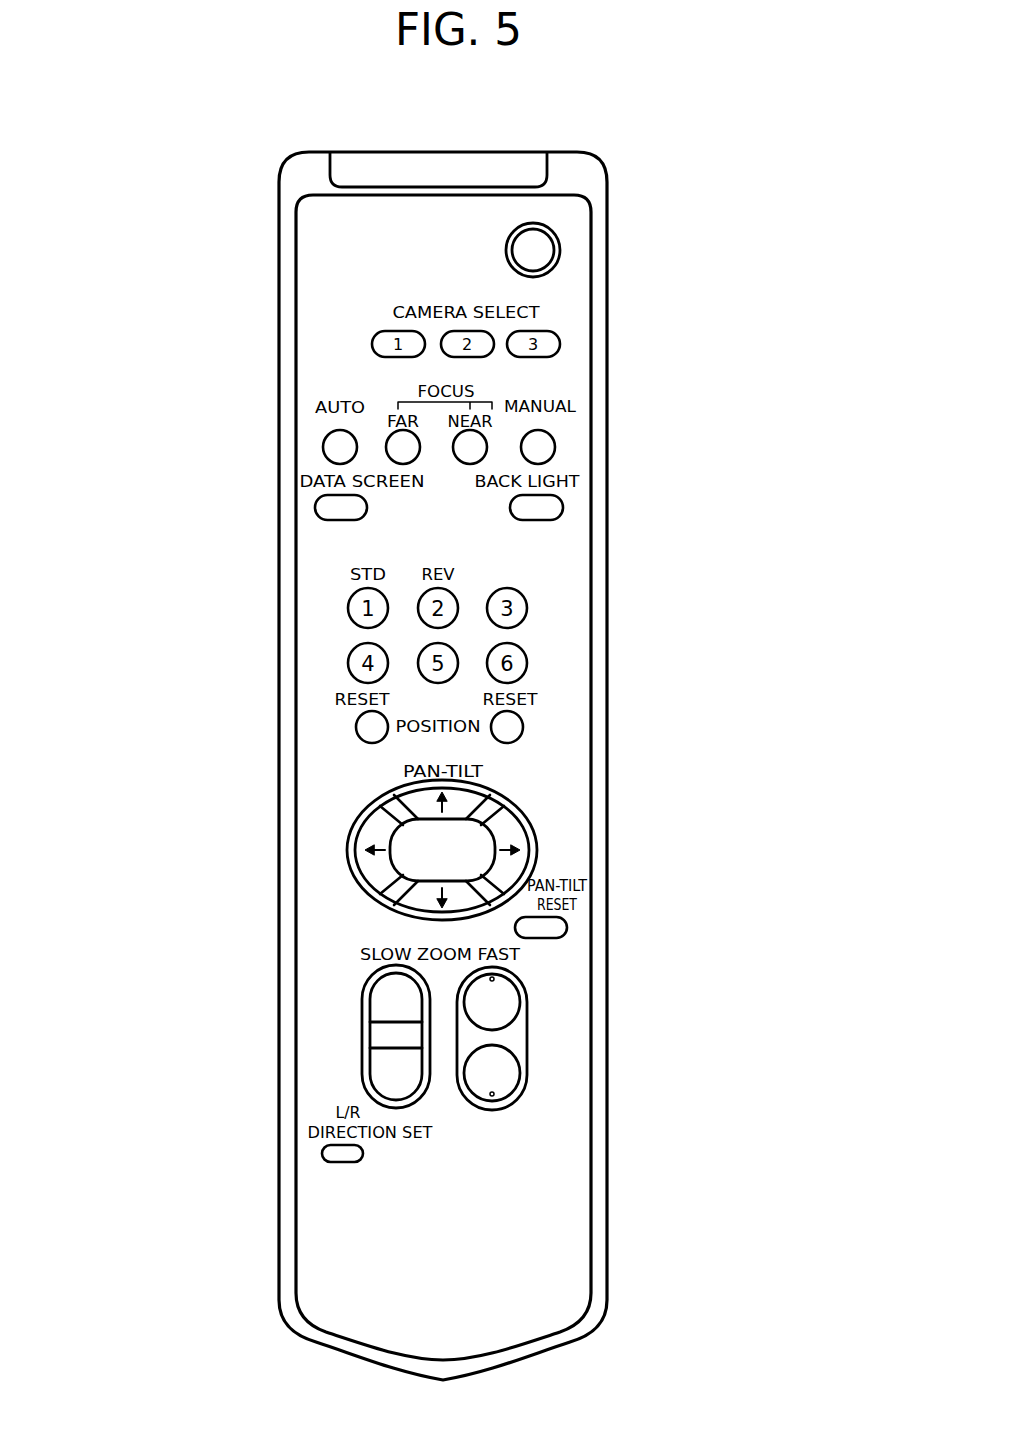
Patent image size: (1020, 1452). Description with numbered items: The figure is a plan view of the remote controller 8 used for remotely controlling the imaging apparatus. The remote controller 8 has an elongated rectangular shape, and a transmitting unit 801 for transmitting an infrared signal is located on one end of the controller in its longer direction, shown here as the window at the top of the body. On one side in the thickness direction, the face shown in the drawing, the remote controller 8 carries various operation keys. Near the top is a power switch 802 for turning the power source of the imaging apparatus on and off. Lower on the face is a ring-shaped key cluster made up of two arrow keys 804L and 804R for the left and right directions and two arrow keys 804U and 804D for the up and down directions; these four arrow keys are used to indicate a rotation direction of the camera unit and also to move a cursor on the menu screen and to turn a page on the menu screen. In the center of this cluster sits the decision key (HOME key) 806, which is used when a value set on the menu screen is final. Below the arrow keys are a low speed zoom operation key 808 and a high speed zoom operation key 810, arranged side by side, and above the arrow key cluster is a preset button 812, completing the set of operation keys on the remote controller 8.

The remote controller 8 is at (153, 297).
The transmitting unit 801 is at (470, 166).
The power switch 802 is at (545, 247).
The arrow key for up direction 804U is at (473, 799).
The arrow key for right direction 804R is at (505, 819).
The arrow key for left direction 804L is at (365, 841).
The arrow key for down direction 804D is at (473, 903).
The decision key (HOME key) 806 is at (481, 847).
The low speed zoom operation key 808 is at (377, 1008).
The high speed zoom operation key 810 is at (511, 1040).
The preset button 812 is at (356, 724).